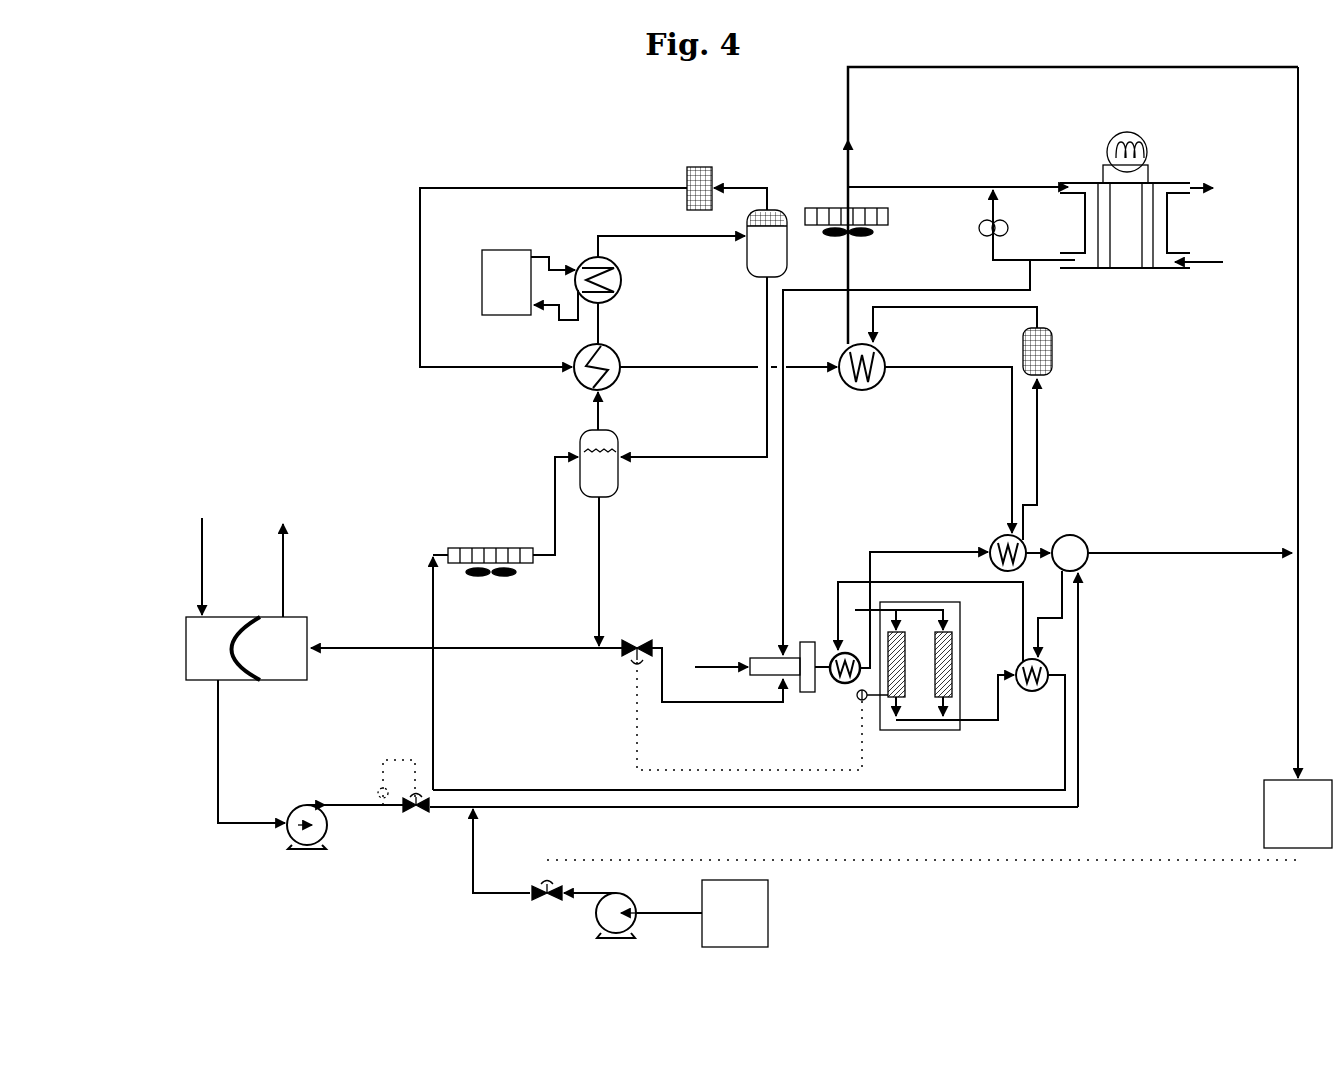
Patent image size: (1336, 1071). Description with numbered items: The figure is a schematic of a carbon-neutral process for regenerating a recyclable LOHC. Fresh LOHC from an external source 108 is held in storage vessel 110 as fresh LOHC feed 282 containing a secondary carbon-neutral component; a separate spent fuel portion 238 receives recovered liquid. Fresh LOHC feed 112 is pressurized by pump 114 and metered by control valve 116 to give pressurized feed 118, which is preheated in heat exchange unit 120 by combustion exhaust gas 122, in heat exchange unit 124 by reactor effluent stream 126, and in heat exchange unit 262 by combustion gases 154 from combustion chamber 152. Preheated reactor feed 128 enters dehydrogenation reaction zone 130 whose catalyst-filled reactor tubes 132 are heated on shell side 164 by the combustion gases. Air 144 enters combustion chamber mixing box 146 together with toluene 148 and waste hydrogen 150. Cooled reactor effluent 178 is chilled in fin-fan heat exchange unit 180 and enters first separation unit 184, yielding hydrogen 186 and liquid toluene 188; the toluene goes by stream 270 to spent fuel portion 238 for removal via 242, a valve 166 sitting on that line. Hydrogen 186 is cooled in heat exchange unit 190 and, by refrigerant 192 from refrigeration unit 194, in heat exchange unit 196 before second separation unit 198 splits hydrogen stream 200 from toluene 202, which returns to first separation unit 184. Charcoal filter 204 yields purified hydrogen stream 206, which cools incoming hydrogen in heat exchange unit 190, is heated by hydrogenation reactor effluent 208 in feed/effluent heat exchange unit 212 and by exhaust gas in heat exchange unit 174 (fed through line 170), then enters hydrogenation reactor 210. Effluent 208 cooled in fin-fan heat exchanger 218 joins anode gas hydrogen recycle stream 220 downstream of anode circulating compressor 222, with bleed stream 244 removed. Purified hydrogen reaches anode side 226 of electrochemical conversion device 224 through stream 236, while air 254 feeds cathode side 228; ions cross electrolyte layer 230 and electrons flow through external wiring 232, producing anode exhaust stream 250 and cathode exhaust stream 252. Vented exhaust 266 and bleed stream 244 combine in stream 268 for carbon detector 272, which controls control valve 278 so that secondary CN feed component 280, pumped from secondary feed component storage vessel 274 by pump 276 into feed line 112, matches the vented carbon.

The external source 108 is at (200, 570).
The storage vessel 110 is at (284, 686).
The fresh LOHC feed 112 is at (218, 775).
The pump 114 is at (323, 850).
The control valve 116 is at (424, 807).
The pressurized feed 118 is at (674, 809).
The heat exchange unit 120 is at (1078, 541).
The combustion exhaust gas 122 is at (956, 552).
The heat exchange unit 124 is at (1018, 664).
The reactor effluent stream 126 is at (999, 721).
The preheated reactor feed 128 is at (853, 608).
The dehydrogenation reaction zone 130 is at (961, 604).
The reactor tubes 132 is at (896, 699).
The air 144 is at (714, 663).
The combustion chamber mixing box 146 is at (756, 658).
The toluene 148 is at (690, 705).
The waste hydrogen 150 is at (781, 562).
The combustion chamber 152 is at (803, 694).
The combustion gases 154 is at (811, 641).
The shell side 164 is at (903, 663).
The valve 166 is at (630, 660).
The line 170 is at (1043, 631).
The heat exchange unit 174 is at (1021, 541).
The cooled reactor effluent 178 is at (640, 788).
The fin-fan heat exchange unit 180 is at (505, 546).
The first separation unit 184 is at (580, 442).
The hydrogen 186 is at (601, 406).
The liquid toluene 188 is at (603, 550).
The heat exchange unit 190 is at (611, 347).
The refrigerant 192 is at (549, 258).
The refrigeration unit 194 is at (509, 316).
The heat exchange unit 196 is at (620, 286).
The second separation unit 198 is at (748, 246).
The hydrogen stream 200 is at (752, 182).
The toluene 202 is at (760, 296).
The charcoal filter 204 is at (701, 166).
The purified hydrogen stream 206 is at (552, 186).
The hydrogenation reactor effluent 208 is at (976, 309).
The hydrogenation reactor 210 is at (1055, 359).
The feed/effluent heat exchange unit 212 is at (876, 389).
The fin-fan heat exchanger 218 is at (890, 219).
The anode gas hydrogen recycle stream 220 is at (1001, 199).
The anode circulating compressor 222 is at (1010, 232).
The electrochemical conversion device 224 is at (1170, 178).
The anode side 226 is at (1104, 270).
The cathode side 228 is at (1150, 260).
The electrolyte layer 230 is at (1127, 260).
The external wiring 232 is at (1119, 135).
The stream 236 is at (1036, 186).
The spent fuel portion 238 is at (266, 654).
The removal 242 is at (286, 553).
The bleed stream 244 is at (856, 138).
The anode exhaust stream 250 is at (1040, 266).
The cathode exhaust stream 252 is at (1210, 196).
The air 254 is at (1205, 262).
The heat exchange unit 262 is at (843, 685).
The combustion exhaust gas vent 266 is at (1185, 549).
The combined exhaust stream 268 is at (1292, 668).
The stream 270 is at (373, 645).
The carbon detector 272 is at (1265, 797).
The secondary feed component storage vessel 274 is at (735, 913).
The pump 276 is at (598, 909).
The control valve 278 is at (533, 895).
The secondary CN feed component 280 is at (470, 815).
The fresh LOHC feed 282 is at (207, 654).